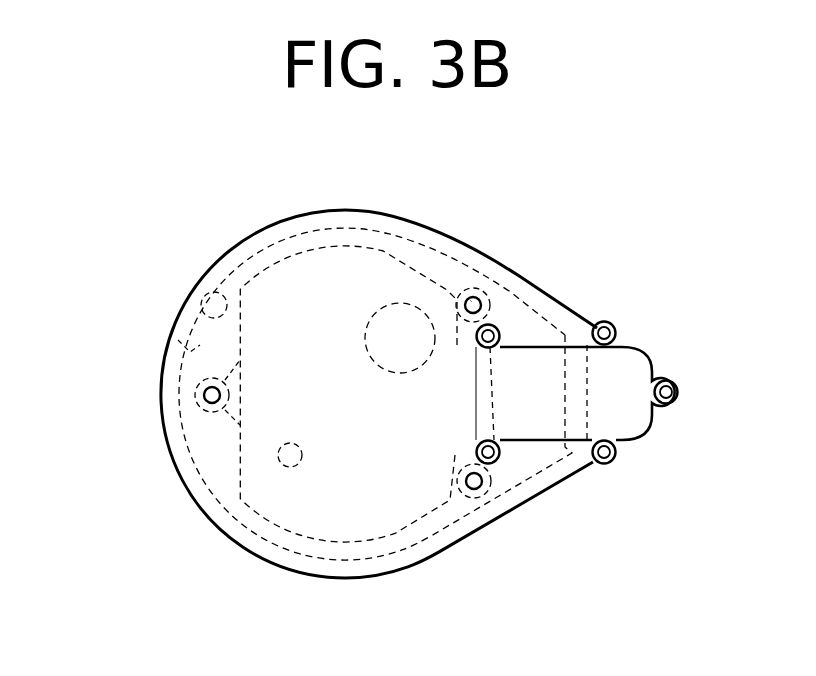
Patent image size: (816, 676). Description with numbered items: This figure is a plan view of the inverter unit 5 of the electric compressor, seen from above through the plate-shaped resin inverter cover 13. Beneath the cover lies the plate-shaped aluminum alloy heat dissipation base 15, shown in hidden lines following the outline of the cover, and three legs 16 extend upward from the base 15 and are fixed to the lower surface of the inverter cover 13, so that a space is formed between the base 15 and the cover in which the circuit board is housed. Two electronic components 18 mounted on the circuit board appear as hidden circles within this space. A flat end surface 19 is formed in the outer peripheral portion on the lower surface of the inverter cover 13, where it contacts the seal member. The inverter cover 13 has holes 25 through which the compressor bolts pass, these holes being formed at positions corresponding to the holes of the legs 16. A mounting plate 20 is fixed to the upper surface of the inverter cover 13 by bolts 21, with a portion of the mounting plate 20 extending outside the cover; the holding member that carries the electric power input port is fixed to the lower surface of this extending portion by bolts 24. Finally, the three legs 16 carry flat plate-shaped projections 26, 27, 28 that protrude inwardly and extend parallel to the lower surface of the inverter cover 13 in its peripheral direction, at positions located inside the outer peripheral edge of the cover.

The inverter unit 5 is at (542, 236).
The inverter cover 13 is at (268, 227).
The heat dissipation base 15 is at (352, 245).
The legs 16 is at (225, 392).
The electronic components 18 is at (365, 338).
The flat end surface 19 is at (208, 293).
The mounting plate 20 is at (641, 358).
The bolts 21 is at (499, 330).
The bolts 24 is at (612, 322).
The holes 25 is at (476, 297).
The projection 26 is at (175, 348).
The projection 27 is at (436, 258).
The projection 28 is at (452, 548).